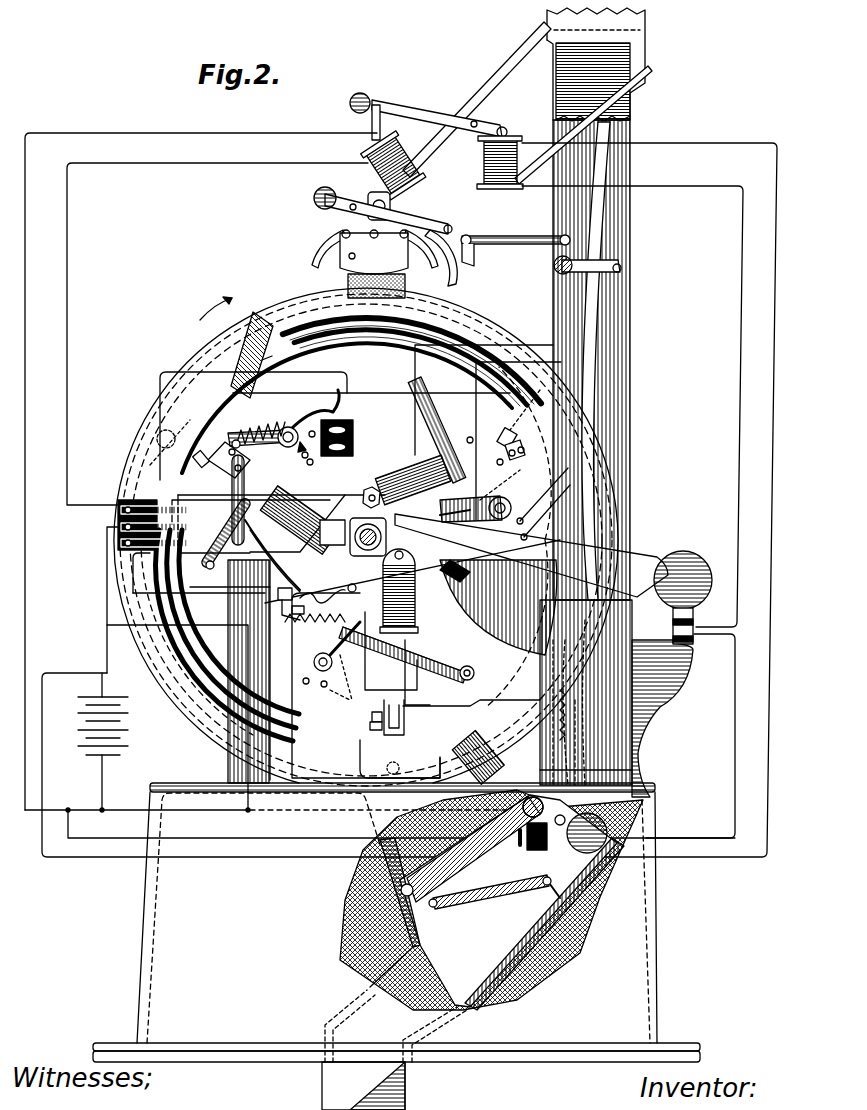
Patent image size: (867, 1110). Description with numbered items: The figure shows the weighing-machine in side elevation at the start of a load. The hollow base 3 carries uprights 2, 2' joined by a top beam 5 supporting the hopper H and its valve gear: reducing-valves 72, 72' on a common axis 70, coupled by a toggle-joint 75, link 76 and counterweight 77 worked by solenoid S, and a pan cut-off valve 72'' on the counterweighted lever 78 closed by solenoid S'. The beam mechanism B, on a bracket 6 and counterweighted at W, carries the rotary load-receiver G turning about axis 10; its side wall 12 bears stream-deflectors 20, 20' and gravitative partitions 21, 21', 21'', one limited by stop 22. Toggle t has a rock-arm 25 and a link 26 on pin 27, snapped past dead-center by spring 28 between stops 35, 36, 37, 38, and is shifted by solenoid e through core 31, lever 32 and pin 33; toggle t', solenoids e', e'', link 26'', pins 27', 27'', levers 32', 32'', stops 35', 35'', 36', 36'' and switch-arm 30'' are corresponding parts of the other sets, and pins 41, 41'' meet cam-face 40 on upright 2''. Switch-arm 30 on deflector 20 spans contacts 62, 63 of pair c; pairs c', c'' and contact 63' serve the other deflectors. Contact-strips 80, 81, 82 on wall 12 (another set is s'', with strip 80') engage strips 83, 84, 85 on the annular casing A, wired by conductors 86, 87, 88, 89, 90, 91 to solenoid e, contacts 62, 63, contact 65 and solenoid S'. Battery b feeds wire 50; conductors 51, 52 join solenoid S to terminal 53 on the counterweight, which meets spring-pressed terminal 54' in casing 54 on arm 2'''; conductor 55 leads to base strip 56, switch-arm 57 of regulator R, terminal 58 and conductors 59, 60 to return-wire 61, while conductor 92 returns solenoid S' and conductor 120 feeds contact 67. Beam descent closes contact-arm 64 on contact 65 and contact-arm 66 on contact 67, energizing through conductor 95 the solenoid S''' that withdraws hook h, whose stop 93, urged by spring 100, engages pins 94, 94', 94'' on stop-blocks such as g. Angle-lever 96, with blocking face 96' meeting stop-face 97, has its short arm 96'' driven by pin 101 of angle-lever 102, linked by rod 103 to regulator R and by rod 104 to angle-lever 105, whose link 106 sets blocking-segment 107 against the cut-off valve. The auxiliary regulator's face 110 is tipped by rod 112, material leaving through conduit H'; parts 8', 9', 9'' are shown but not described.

The side frame 2 is at (602, 692).
The side frame 2' is at (608, 360).
The upright 2'' is at (234, 671).
The arm 2''' is at (671, 718).
The hollow base 3 is at (396, 922).
The top beam 5 is at (636, 84).
The bracket 6 is at (498, 607).
The pivot 8' is at (475, 669).
The contact block 9' is at (505, 446).
The contact block 9'' is at (216, 451).
The axis of rotation 10 is at (356, 526).
The side wall 12 is at (473, 441).
The stream-deflector 20 is at (366, 528).
The stream-deflector 20' is at (197, 637).
The gravitative partition 21 is at (521, 511).
The gravitative partition 21' is at (172, 434).
The gravitative partition 21'' is at (329, 697).
The stop 22 is at (472, 436).
The toggle-arm 25 is at (314, 410).
The toggle-arm 26 is at (284, 445).
The toggle-arm 26'' is at (491, 463).
The pin 27 is at (305, 462).
The pin 27' is at (349, 677).
The pin 27'' is at (500, 490).
The helical spring 28 is at (254, 428).
The circuit-controller 30 is at (371, 390).
The contact block 30'' is at (480, 575).
The core 31 is at (225, 514).
The lever 32 is at (221, 533).
The lever 32' is at (405, 650).
The arm 32'' is at (437, 430).
The pin 33 is at (260, 451).
The stop 35 is at (252, 355).
The pin 35' is at (290, 667).
The pin 35'' is at (558, 504).
The stop 36 is at (247, 362).
The pin 36' is at (299, 685).
The pin 36'' is at (556, 487).
The stop 37 is at (314, 427).
The stop 38 is at (318, 461).
The cam-face 40 is at (232, 498).
The pin 41 is at (294, 509).
The pin 41'' is at (444, 508).
The conducting-wire 50 is at (118, 600).
The conductor 51 is at (100, 862).
The conductor 52 is at (740, 396).
The contact-terminal 53 is at (673, 627).
The insulated casing 54 is at (697, 644).
The spring-pressed terminal 54' is at (699, 616).
The conductor 55 is at (735, 736).
The contact-strip 56 is at (556, 785).
The switch-arm 57 is at (522, 848).
The terminal 58 is at (525, 846).
The conductor 59 is at (401, 824).
The conductor 60 is at (292, 801).
The return-wire 61 is at (103, 778).
The contact 62 is at (346, 428).
The contact 63 is at (351, 441).
The contact 63' is at (303, 605).
The contact-arm 64 is at (328, 522).
The contact 65 is at (272, 556).
The contact-arm 66 is at (328, 590).
The contact member 67 is at (315, 611).
The common axis 70 is at (392, 205).
The reducing-valve 72 is at (322, 247).
The reducing-valve 72' is at (414, 249).
The cut-off valve 72'' is at (439, 264).
The toggle-joint 75 is at (374, 252).
The link 76 is at (372, 125).
The counterweight 77 is at (415, 112).
The counterweighted lever 78 is at (436, 222).
The contact-strip 80 is at (300, 411).
The brush 80' is at (239, 622).
The contact-strip 81 is at (172, 600).
The contact-strip 82 is at (164, 590).
The contact-strip 83 is at (133, 550).
The contact-strip 84 is at (118, 524).
The contact-strip 85 is at (124, 504).
The conductor 86 is at (330, 495).
The conductor 87 is at (230, 578).
The conductor 88 is at (166, 372).
The conductor 89 is at (281, 485).
The conductor 90 is at (199, 601).
The conductor 91 is at (217, 326).
The conductor 92 is at (150, 133).
The stop member 93 is at (395, 715).
The stop 94 is at (471, 703).
The stop 94' is at (526, 406).
The stop 94'' is at (251, 498).
The conductor 95 is at (397, 658).
The angle-lever 96 is at (361, 769).
The blocking face 96' is at (384, 757).
The short arm 96'' is at (587, 715).
The stop-face 97 is at (196, 462).
The spring 100 is at (575, 748).
The pin 101 is at (565, 690).
The angle-lever 102 is at (585, 666).
The link 103 is at (556, 726).
The connecting-rod 104 is at (590, 360).
The angle-lever 105 is at (600, 266).
The link 106 is at (512, 243).
The blocking-segment 107 is at (477, 257).
The stream-supporting face 110 is at (420, 912).
The link 112 is at (516, 890).
The conductor 120 is at (240, 625).
The annular member A is at (150, 440).
The beam mechanism B is at (640, 562).
The load-receiver G is at (470, 400).
The hopper H is at (527, 103).
The discharge-conduit H' is at (372, 1050).
The regulator R is at (491, 900).
The solenoid S is at (493, 162).
The solenoid S' is at (383, 165).
The solenoid S''' is at (488, 758).
The counterweight W is at (683, 556).
The battery b is at (92, 714).
The contact pair c is at (337, 445).
The contact pair c' is at (286, 595).
The contact pair c'' is at (475, 549).
The solenoid e is at (299, 520).
The solenoid e' is at (401, 591).
The solenoid e'' is at (407, 481).
The stop-block g is at (370, 728).
The hook h is at (395, 716).
The set of contact-strips s'' is at (361, 391).
The toggle device t is at (302, 443).
The toggle device t' is at (390, 652).